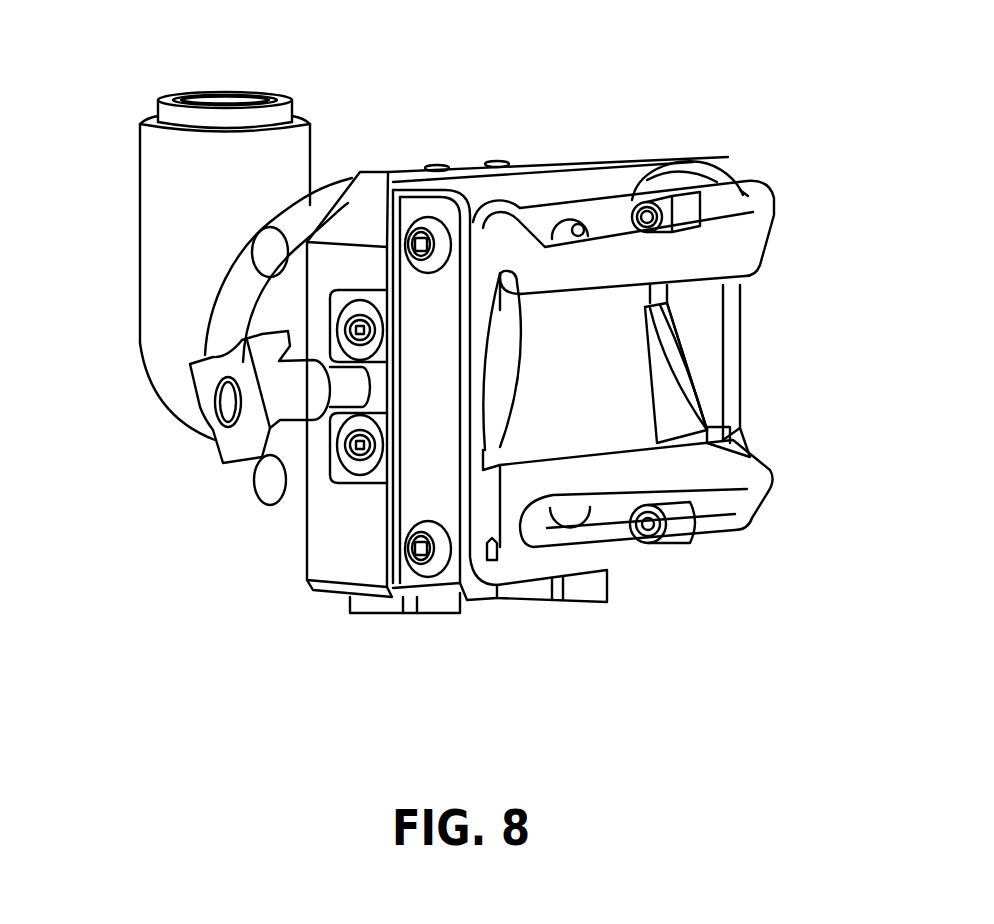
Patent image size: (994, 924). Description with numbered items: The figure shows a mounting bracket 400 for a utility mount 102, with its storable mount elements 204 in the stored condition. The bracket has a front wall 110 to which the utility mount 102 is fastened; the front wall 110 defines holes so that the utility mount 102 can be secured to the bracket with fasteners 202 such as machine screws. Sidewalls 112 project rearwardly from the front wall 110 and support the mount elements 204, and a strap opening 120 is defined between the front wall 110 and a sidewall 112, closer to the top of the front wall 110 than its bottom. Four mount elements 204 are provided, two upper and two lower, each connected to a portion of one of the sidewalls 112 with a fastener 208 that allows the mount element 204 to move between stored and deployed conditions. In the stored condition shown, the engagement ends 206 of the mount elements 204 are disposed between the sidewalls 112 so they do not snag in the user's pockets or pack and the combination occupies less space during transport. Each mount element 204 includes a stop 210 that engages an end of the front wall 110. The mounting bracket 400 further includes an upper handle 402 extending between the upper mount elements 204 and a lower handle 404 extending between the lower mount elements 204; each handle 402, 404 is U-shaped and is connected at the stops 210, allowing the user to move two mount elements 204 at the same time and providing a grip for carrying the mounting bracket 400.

The utility mount 102 is at (190, 458).
The front wall 110 is at (517, 187).
The sidewall 112 is at (420, 480).
The strap opening 120 is at (397, 392).
The fastener 202 is at (571, 213).
The mount element 204 is at (518, 350).
The engagement end 206 is at (500, 448).
The fastener 208 is at (421, 225).
The stop 210 is at (515, 187).
The mounting bracket 400 is at (795, 186).
The upper handle 402 is at (597, 262).
The lower handle 404 is at (583, 481).